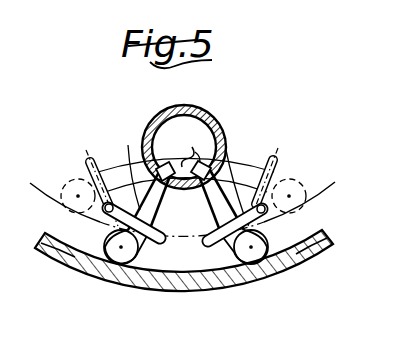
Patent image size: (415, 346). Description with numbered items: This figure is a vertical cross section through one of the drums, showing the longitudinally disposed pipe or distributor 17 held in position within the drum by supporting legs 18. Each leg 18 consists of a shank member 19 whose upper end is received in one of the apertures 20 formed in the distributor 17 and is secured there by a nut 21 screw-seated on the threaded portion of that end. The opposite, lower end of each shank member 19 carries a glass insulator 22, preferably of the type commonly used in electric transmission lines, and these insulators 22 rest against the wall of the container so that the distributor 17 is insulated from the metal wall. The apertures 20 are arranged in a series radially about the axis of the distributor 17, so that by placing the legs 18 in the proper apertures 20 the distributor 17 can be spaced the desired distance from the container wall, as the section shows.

The distributor 17 is at (210, 122).
The legs 18 is at (228, 262).
The shank member 19 is at (183, 184).
The apertures 20 is at (183, 191).
The nut 21 is at (183, 157).
The glass insulator 22 is at (118, 262).